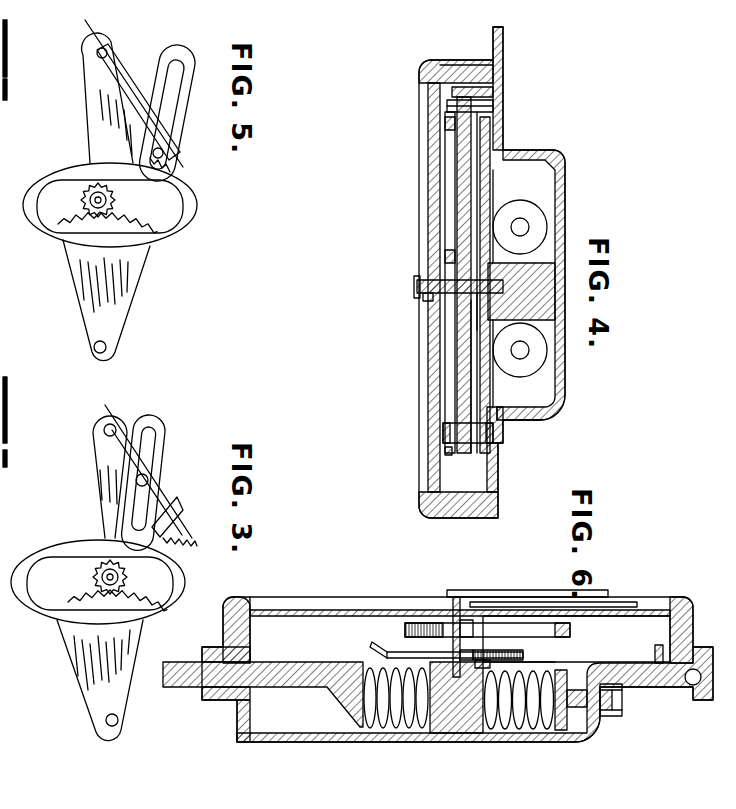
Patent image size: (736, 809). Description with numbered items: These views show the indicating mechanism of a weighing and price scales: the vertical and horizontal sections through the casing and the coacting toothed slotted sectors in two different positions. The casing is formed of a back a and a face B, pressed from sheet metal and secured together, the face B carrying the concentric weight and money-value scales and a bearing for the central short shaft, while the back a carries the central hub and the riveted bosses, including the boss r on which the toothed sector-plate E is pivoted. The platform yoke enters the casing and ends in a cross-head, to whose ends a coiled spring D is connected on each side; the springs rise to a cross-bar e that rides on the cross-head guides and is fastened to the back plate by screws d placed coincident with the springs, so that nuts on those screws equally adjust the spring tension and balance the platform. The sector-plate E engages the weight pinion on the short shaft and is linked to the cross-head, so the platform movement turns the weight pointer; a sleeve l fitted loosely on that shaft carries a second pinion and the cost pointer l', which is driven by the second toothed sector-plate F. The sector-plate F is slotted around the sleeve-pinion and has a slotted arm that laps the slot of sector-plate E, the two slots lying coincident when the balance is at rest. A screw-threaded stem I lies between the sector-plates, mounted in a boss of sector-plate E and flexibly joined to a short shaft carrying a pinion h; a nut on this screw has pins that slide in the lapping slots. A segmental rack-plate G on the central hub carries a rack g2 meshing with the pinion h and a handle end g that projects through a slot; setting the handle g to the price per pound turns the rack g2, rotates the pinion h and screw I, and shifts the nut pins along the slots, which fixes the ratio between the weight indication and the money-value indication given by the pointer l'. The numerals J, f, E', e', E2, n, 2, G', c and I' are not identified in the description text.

In FIG. 5, the body plate J is at (110, 262).
In FIG. 3, the body plate J is at (98, 640).
In FIG. 5, the cross-bar e is at (116, 360).
In FIG. 3, the cross-bar e is at (117, 741).
In FIG. 6, the cross-bar e is at (571, 700).
In FIG. 5, the toothed sector-plate E is at (107, 98).
In FIG. 3, the toothed sector-plate E is at (110, 477).
In FIG. 5, the pin hole f is at (100, 48).
In FIG. 3, the pin hole f is at (108, 424).
In FIG. 5, the slotted arm E' is at (174, 113).
In FIG. 3, the slotted arm E' is at (151, 482).
In FIG. 5, the lever bar e' is at (142, 100).
In FIG. 3, the lever bar e' is at (151, 471).
In FIG. 3, the rack block E2 is at (177, 529).
In FIG. 5, the toothed sector-plate F is at (88, 200).
In FIG. 3, the toothed sector-plate F is at (100, 577).
In FIG. 4, the face B is at (428, 478).
In FIG. 6, the face B is at (273, 610).
In FIG. 4, the rod n is at (406, 108).
In FIG. 6, the rod n is at (390, 653).
In FIG. 4, the screw-threaded stem I is at (432, 275).
In FIG. 6, the screw-threaded stem I is at (330, 642).
In FIG. 4, the sleeve l is at (456, 282).
In FIG. 6, the sleeve l is at (518, 624).
In FIG. 4, the pointer l' is at (442, 282).
In FIG. 4, the collar 2 is at (445, 245).
In FIG. 4, the rack g2 is at (469, 86).
In FIG. 6, the rack g2 is at (569, 647).
In FIG. 4, the handle end g is at (440, 64).
In FIG. 4, the bushing G' is at (484, 275).
In FIG. 4, the roller c is at (521, 215).
In FIG. 4, the screws d is at (523, 346).
In FIG. 4, the segmental rack-plate G is at (503, 333).
In FIG. 6, the segmental rack-plate G is at (576, 639).
In FIG. 4, the back a is at (521, 427).
In FIG. 6, the back a is at (517, 708).
In FIG. 4, the boss r is at (476, 321).
In FIG. 6, the boss r is at (624, 728).
In FIG. 4, the shaft end I' is at (465, 376).
In FIG. 6, the shaft end I' is at (534, 644).
In FIG. 6, the coiled spring D is at (403, 727).
In FIG. 6, the pinion h is at (537, 590).